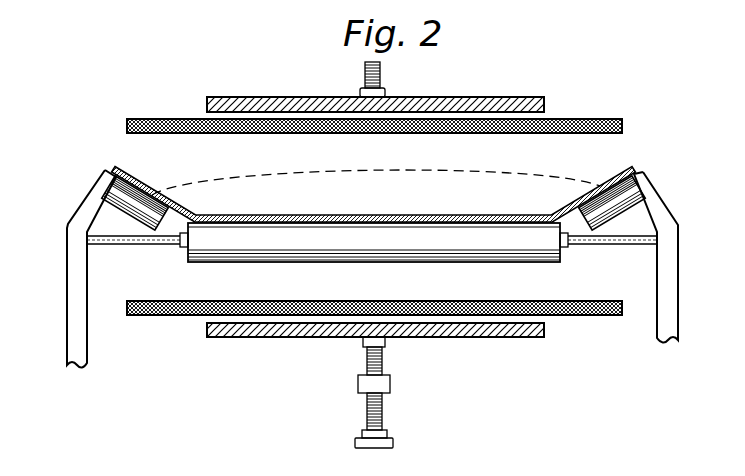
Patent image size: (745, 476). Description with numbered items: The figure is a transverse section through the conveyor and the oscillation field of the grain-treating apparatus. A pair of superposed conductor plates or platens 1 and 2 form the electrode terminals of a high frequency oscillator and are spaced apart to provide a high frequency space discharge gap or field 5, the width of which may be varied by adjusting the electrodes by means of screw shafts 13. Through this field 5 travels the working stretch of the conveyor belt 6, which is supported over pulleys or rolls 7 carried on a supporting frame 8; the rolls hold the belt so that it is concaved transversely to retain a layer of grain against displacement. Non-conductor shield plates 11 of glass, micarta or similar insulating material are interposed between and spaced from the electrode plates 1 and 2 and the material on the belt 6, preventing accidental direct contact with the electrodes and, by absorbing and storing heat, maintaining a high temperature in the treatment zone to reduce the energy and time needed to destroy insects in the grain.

The conductor plate 1 is at (450, 98).
The conductor plate 2 is at (388, 338).
The high frequency space discharge gap or field 5 is at (376, 186).
The conveyor belt 6 is at (308, 214).
The pulleys or rolls 7 is at (331, 245).
The supporting frame 8 is at (68, 313).
The non-conductor shield plates 11 is at (600, 104).
The screw shafts 13 is at (435, 84).